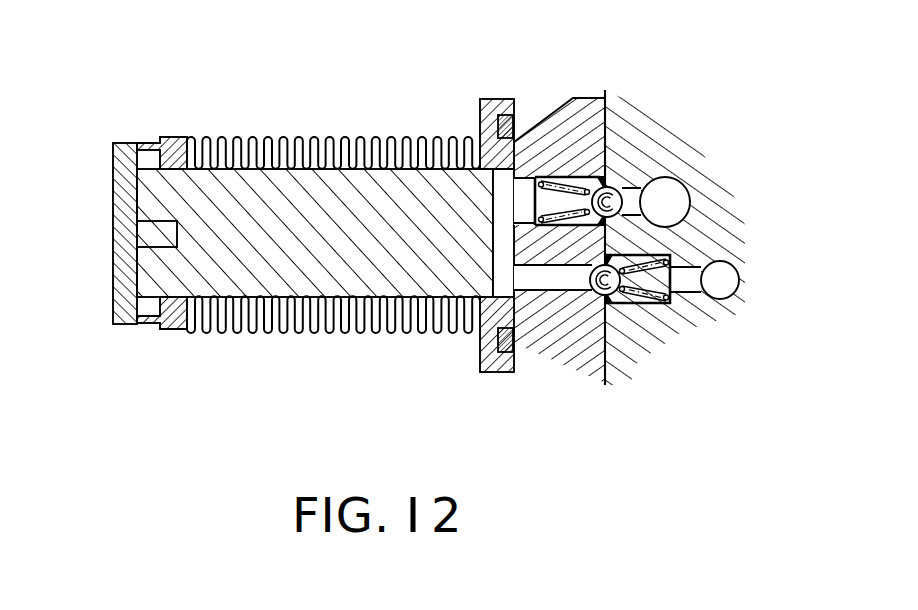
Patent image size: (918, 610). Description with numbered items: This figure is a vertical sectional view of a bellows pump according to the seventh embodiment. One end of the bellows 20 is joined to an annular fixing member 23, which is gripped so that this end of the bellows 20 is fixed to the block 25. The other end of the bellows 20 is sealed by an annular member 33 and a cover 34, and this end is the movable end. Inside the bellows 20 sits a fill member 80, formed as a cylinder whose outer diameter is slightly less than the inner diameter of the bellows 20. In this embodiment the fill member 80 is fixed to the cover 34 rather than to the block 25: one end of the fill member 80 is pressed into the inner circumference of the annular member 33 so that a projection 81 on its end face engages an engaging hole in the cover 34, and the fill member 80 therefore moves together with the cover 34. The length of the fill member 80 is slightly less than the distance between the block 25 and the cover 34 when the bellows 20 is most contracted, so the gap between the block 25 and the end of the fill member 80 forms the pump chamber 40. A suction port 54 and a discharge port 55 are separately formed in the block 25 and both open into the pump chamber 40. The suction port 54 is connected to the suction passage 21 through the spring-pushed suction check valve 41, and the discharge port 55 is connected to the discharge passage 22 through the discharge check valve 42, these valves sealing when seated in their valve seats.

The bellows 20 is at (207, 136).
The suction passage 21 is at (667, 196).
The discharge passage 22 is at (722, 280).
The annular fixing member 23 is at (510, 373).
The block 25 is at (577, 104).
The annular member 33 is at (177, 331).
The cover 34 is at (118, 314).
The pump chamber 40 is at (500, 262).
The suction check valve 41 is at (617, 190).
The discharge check valve 42 is at (623, 304).
The suction port 54 is at (526, 200).
The discharge port 55 is at (567, 282).
The fill member 80 is at (293, 276).
The projection 81 is at (150, 253).